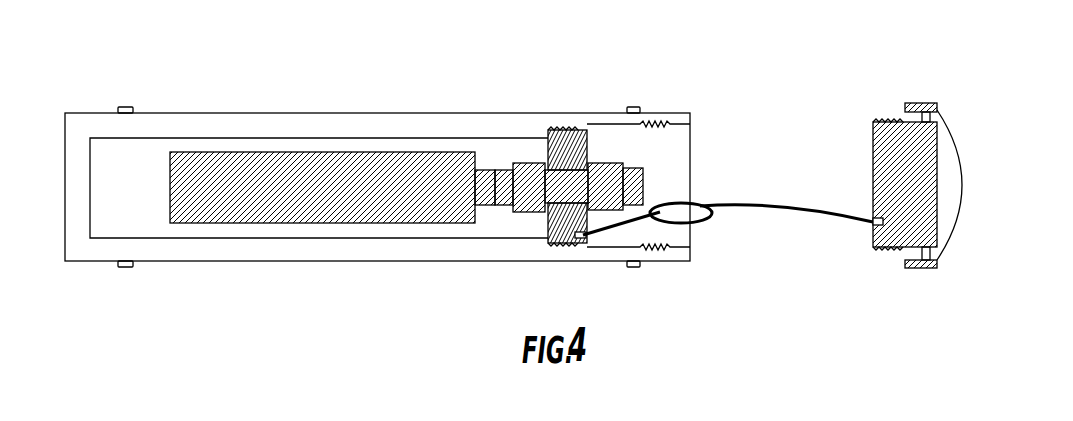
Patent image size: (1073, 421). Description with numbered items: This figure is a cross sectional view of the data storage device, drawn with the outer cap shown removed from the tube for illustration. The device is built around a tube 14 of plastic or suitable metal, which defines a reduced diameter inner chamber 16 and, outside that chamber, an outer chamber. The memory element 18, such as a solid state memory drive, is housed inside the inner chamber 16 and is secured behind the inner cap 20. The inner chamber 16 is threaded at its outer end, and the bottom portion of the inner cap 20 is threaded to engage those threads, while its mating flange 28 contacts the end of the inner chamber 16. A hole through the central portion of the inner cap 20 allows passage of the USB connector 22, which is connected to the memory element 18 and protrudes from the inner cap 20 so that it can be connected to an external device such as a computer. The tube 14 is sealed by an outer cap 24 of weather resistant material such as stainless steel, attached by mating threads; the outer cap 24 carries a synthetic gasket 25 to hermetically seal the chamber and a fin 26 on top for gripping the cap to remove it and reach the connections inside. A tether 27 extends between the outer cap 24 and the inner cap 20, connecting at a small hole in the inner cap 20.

The tube 14 is at (407, 113).
The inner chamber 16 is at (115, 155).
The memory element 18 is at (263, 152).
The inner chamber cap 20 is at (548, 220).
The USB cable connector 22 is at (527, 163).
The outer cap 24 is at (937, 192).
The synthetic gasket 25 is at (917, 255).
The fin 26 is at (950, 143).
The tether 27 is at (747, 212).
The mating flange 28 is at (587, 133).